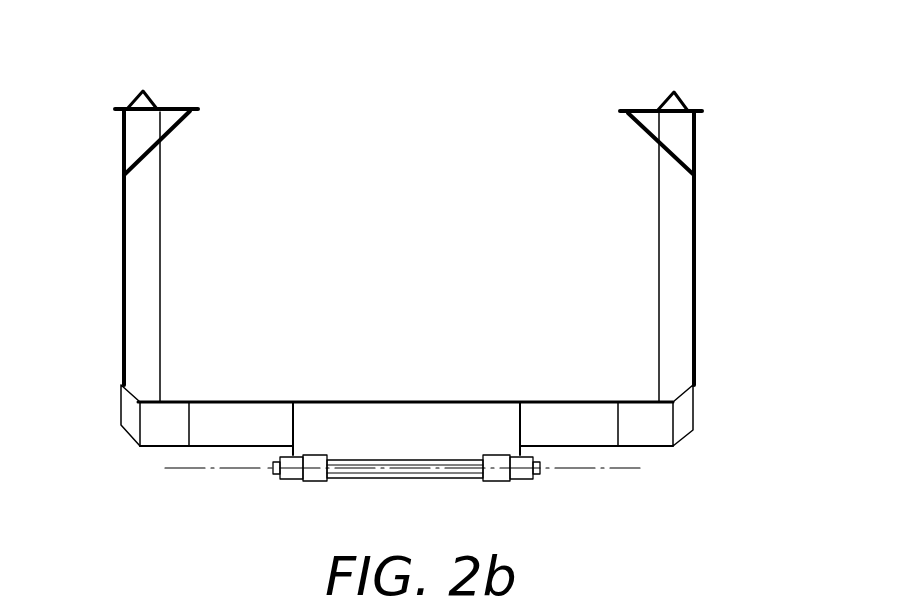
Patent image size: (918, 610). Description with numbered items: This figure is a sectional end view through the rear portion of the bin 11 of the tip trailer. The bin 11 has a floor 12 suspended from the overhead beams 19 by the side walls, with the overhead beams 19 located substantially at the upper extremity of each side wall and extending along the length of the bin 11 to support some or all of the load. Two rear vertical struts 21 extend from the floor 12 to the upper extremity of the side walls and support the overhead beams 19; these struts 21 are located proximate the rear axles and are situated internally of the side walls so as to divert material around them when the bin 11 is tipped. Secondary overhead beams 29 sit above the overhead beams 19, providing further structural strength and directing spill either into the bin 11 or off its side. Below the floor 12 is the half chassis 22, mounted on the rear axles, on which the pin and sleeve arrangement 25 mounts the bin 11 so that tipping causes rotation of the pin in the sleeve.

The bin 11 is at (409, 247).
The floor 12 is at (475, 402).
The overhead beams 19 is at (138, 129).
The vertical struts 21 is at (152, 260).
The half chassis 22 is at (160, 432).
The pin and sleeve arrangement 25 is at (518, 482).
The secondary overhead beams 29 is at (135, 100).